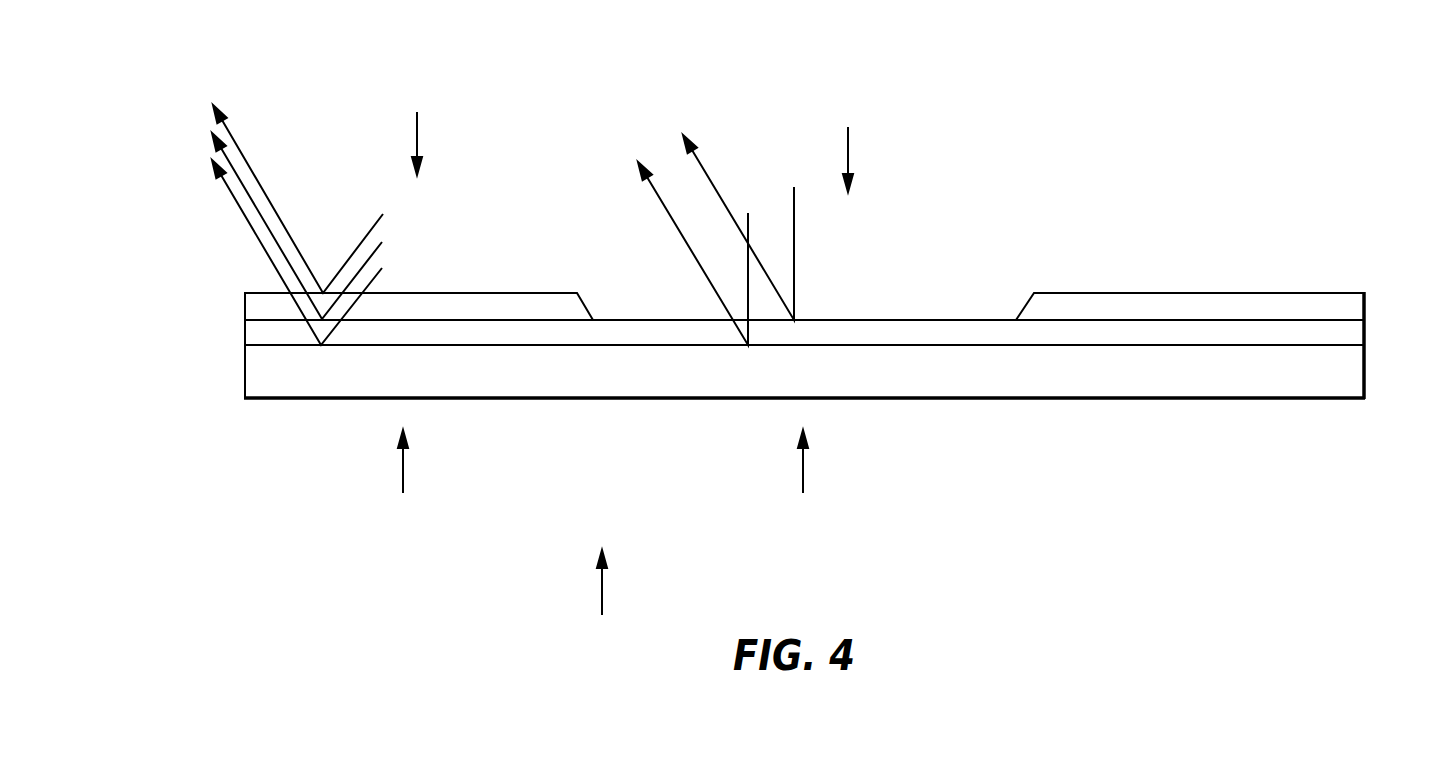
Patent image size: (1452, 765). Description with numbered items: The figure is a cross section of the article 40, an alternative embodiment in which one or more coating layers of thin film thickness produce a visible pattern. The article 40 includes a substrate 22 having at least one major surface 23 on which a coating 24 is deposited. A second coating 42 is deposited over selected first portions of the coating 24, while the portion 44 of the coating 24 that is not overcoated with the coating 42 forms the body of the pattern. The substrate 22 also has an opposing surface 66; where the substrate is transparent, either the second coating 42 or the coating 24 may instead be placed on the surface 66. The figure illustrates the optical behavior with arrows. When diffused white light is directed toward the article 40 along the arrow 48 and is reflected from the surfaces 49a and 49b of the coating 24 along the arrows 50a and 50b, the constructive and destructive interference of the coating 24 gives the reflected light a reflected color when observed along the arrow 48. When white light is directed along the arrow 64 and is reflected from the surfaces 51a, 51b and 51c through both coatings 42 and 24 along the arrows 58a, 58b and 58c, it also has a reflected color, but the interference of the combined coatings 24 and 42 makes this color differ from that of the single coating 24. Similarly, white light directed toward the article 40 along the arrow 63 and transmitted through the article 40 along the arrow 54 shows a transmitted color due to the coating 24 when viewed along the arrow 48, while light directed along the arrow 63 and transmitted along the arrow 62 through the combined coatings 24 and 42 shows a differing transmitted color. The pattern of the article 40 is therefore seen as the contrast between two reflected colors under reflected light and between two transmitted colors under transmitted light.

The substrate 22 is at (245, 373).
The major surface 23 is at (1364, 342).
The coating 24 is at (245, 331).
The article 40 is at (1317, 208).
The second coating 42 is at (245, 303).
The portion 44 is at (1000, 210).
The arrow 48 is at (848, 152).
The surface 49a is at (875, 322).
The surface 49b is at (965, 347).
The arrow 50a is at (704, 170).
The arrow 50b is at (664, 205).
The surface 51a is at (420, 292).
The surface 51b is at (481, 318).
The surface 51c is at (543, 347).
The arrow 54 is at (803, 470).
The arrow 58a is at (248, 160).
The arrow 58b is at (212, 147).
The arrow 58c is at (237, 208).
The arrow 62 is at (403, 470).
The arrow 63 is at (602, 595).
The arrow 64 is at (417, 133).
The surface 66 is at (1160, 400).